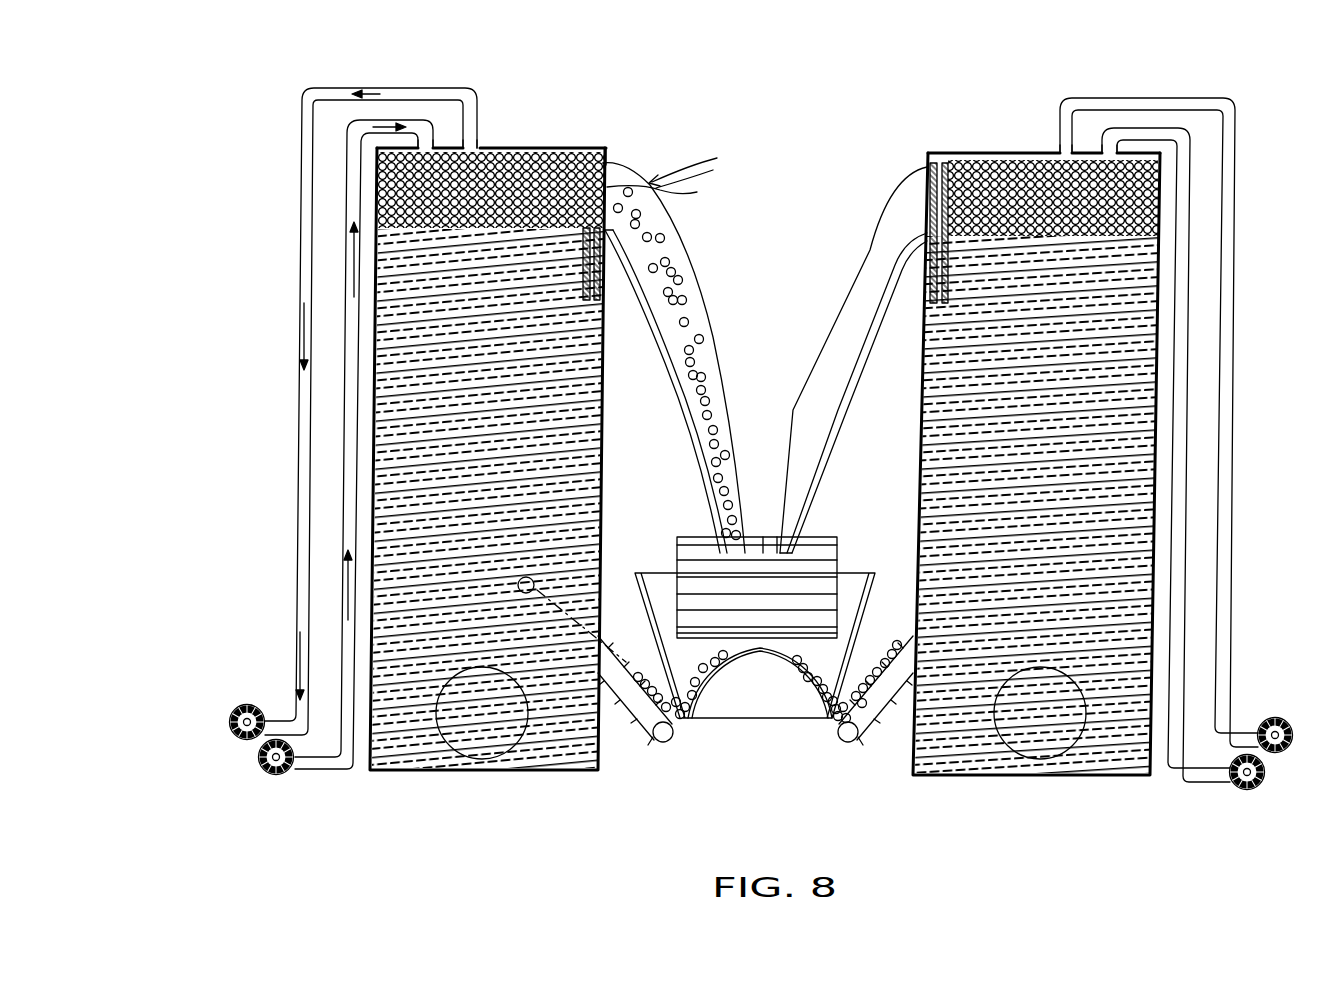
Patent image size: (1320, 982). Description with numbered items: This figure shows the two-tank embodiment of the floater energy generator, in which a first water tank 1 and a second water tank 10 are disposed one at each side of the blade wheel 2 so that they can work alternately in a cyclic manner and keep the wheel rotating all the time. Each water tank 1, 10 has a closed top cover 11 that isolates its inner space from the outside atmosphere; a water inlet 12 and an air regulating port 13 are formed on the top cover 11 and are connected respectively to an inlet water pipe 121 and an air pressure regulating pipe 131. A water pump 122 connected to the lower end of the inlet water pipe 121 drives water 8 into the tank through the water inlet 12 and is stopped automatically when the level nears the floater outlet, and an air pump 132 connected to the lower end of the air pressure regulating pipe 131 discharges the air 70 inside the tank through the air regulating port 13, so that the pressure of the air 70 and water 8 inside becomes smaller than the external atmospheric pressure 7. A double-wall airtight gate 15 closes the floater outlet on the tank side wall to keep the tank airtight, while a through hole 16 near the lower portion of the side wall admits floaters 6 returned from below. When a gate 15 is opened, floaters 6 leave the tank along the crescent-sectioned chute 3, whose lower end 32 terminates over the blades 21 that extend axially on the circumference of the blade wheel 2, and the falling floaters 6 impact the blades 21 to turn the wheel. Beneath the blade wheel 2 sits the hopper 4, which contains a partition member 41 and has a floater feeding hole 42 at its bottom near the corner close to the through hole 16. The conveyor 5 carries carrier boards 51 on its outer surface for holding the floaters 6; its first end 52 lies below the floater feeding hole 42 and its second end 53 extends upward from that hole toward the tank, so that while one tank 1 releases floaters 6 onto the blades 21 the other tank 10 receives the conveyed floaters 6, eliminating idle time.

The water tank 1 is at (511, 495).
The second water tank 10 is at (918, 440).
The top cover 11 is at (563, 148).
The water inlet 12 is at (442, 146).
The air regulating port 13 is at (480, 147).
The inlet water pipe 121 is at (342, 372).
The air pressure regulating pipe 131 is at (341, 87).
The water pump 122 is at (262, 770).
The air pump 132 is at (240, 705).
The air 70 is at (525, 150).
The water 8 is at (470, 615).
The double-wall airtight gate 15 is at (602, 250).
The through hole 16 is at (615, 165).
The external atmospheric pressure 7 is at (671, 169).
The chute 3 is at (830, 283).
The floaters 6 is at (702, 336).
The blades 21 is at (700, 563).
The lower end of chute 32 is at (770, 537).
The blade wheel 2 is at (813, 535).
The hopper 4 is at (853, 590).
The partition member 41 is at (718, 680).
The floater feeding hole 42 is at (684, 722).
The conveyor 5 is at (638, 730).
The carrier boards 51 is at (620, 707).
The first end of conveyor 52 is at (673, 742).
The second end of conveyor 53 is at (540, 584).